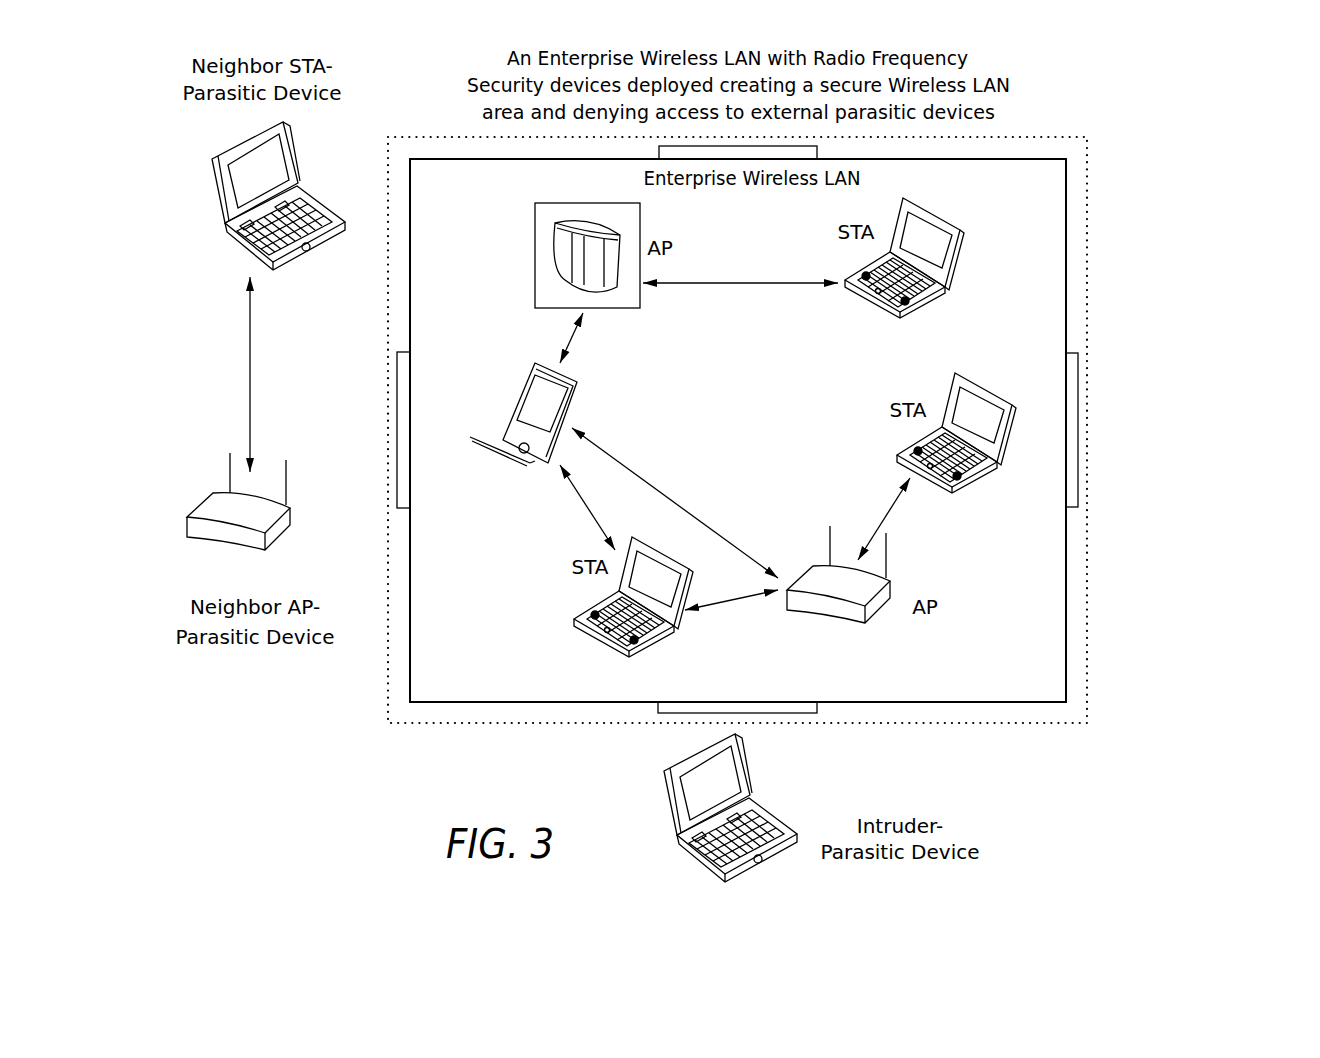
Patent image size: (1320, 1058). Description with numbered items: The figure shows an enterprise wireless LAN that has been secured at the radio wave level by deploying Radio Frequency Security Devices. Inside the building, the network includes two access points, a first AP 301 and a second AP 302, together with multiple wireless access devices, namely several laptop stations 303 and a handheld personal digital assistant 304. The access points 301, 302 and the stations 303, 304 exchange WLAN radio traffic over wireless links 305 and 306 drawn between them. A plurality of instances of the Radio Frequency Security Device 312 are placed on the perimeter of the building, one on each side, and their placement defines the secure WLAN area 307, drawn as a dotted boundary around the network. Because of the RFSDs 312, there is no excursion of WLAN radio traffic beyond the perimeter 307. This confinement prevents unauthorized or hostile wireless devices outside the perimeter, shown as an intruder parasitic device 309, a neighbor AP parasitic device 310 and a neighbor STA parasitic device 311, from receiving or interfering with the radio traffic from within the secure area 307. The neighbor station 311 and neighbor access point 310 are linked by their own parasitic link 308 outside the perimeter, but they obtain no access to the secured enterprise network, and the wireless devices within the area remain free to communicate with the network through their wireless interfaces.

The access point 301 is at (587, 239).
The access point 302 is at (725, 491).
The laptop 303 is at (774, 426).
The personal digital assistant 304 is at (520, 414).
The wireless link 305 is at (754, 444).
The wireless link / boundary 306 is at (845, 532).
The secure WLAN area 307 is at (1090, 249).
The parasitic wireless link 308 is at (221, 374).
The intruder parasitic device 309 is at (738, 808).
The neighbor access point 310 is at (235, 517).
The neighbor station 311 is at (255, 196).
The radio frequency security device 312 is at (1125, 430).